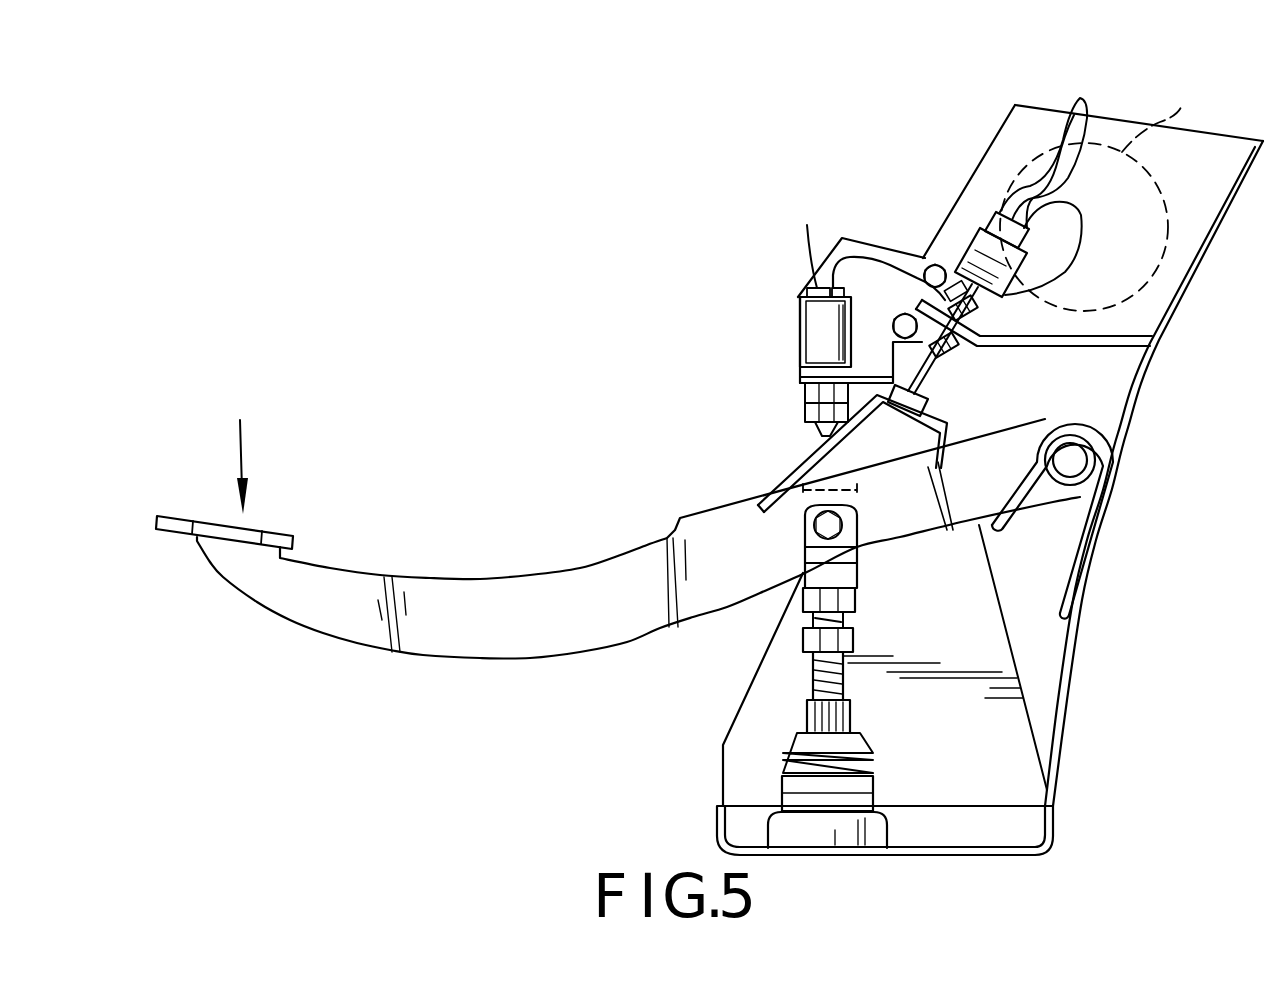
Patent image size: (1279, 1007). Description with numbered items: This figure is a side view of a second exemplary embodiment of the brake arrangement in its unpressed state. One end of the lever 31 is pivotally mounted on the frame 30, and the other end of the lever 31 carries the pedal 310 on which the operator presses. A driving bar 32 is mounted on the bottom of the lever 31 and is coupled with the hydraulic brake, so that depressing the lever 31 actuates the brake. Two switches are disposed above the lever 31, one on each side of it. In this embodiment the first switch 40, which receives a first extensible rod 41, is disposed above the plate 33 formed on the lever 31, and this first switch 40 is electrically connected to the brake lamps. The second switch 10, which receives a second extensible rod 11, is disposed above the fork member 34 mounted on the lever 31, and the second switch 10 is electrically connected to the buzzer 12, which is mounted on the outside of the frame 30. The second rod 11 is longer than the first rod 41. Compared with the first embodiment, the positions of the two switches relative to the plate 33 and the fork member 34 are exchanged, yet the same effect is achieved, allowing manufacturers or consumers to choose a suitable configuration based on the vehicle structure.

The frame 30 is at (908, 112).
The buzzer 12 is at (1165, 186).
The second switch 10 is at (1027, 240).
The second extensible rod 11 is at (928, 380).
The fork member 34 is at (944, 418).
The first switch 40 is at (812, 335).
The first extensible rod 41 is at (817, 438).
The plate 33 is at (858, 490).
The driving bar 32 is at (808, 623).
The lever 31 is at (493, 643).
The pedal 310 is at (283, 536).